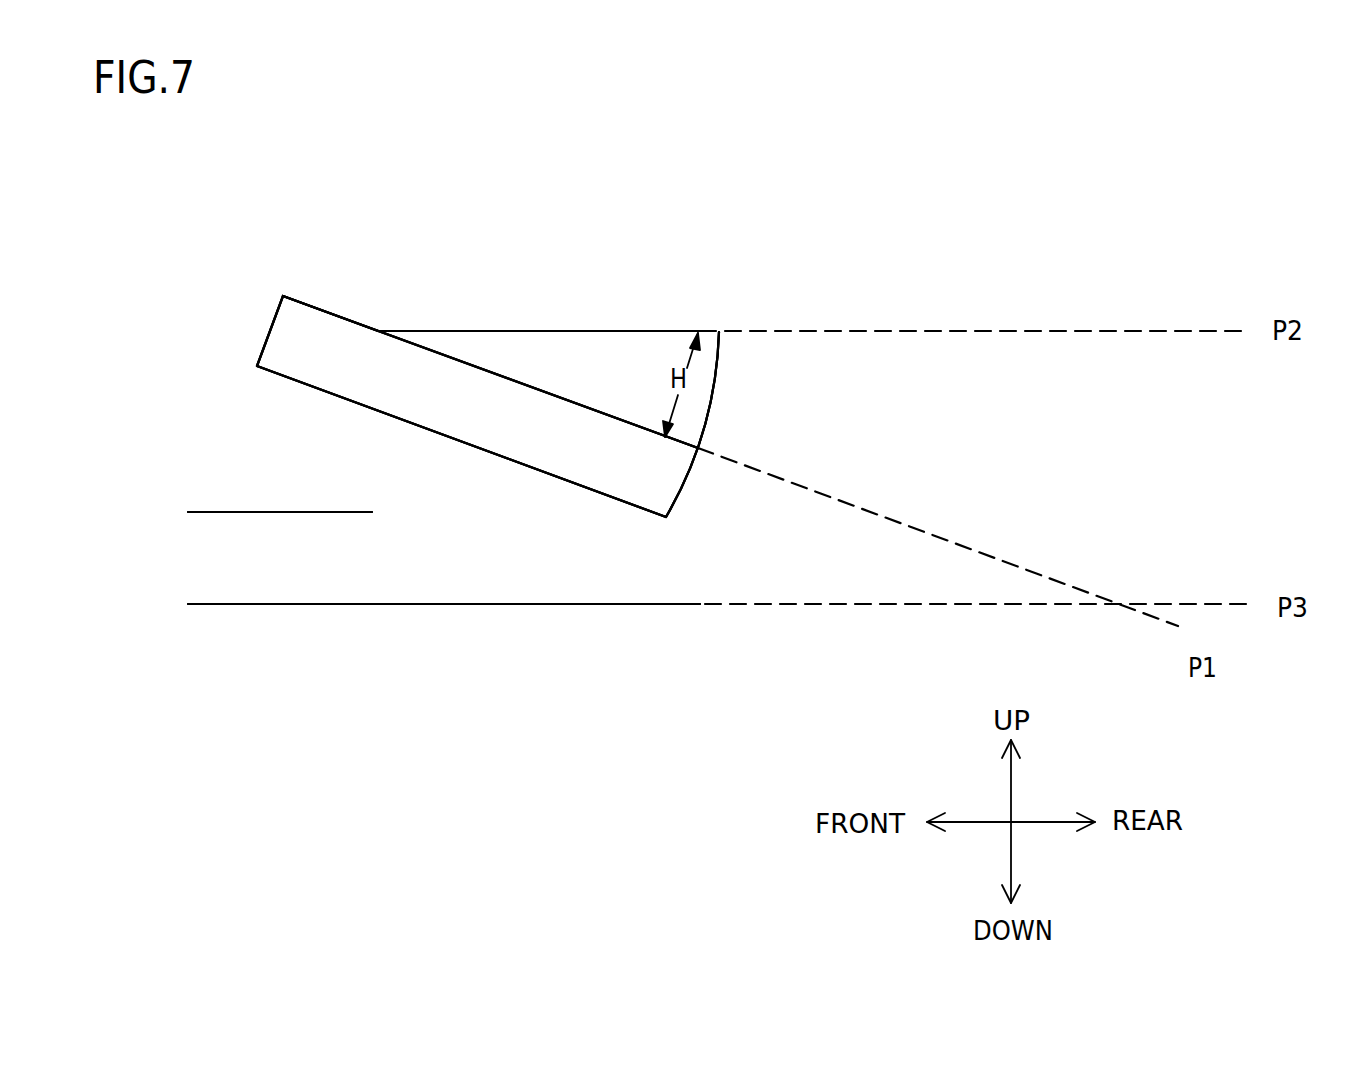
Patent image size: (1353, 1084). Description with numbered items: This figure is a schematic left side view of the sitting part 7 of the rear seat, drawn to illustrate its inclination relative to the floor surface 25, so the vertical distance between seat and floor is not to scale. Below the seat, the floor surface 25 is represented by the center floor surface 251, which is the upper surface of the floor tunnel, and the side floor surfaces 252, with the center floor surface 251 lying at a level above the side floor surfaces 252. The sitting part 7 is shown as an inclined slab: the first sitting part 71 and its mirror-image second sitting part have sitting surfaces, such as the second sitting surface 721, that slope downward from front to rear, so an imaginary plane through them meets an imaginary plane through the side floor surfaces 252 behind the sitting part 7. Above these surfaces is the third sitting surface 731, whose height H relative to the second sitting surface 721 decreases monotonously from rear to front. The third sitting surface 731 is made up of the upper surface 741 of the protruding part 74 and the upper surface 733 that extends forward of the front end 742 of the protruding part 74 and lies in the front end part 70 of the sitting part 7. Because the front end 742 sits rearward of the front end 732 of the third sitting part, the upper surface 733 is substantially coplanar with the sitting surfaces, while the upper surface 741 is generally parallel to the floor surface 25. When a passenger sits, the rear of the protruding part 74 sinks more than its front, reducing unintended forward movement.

The sitting part 7 is at (313, 245).
The front end part 70 is at (293, 268).
The first sitting part 71 is at (630, 465).
The second sitting surface 721 is at (500, 373).
The third sitting surface 731 is at (567, 212).
The front end 732 is at (283, 298).
The upper surface 733 is at (338, 315).
The upper surface 741 is at (500, 331).
The front end 742 is at (378, 333).
The protruding part 74 is at (577, 365).
The floor surface 25 is at (303, 692).
The center floor surface 251 is at (283, 513).
The side floor surface 252 is at (246, 603).